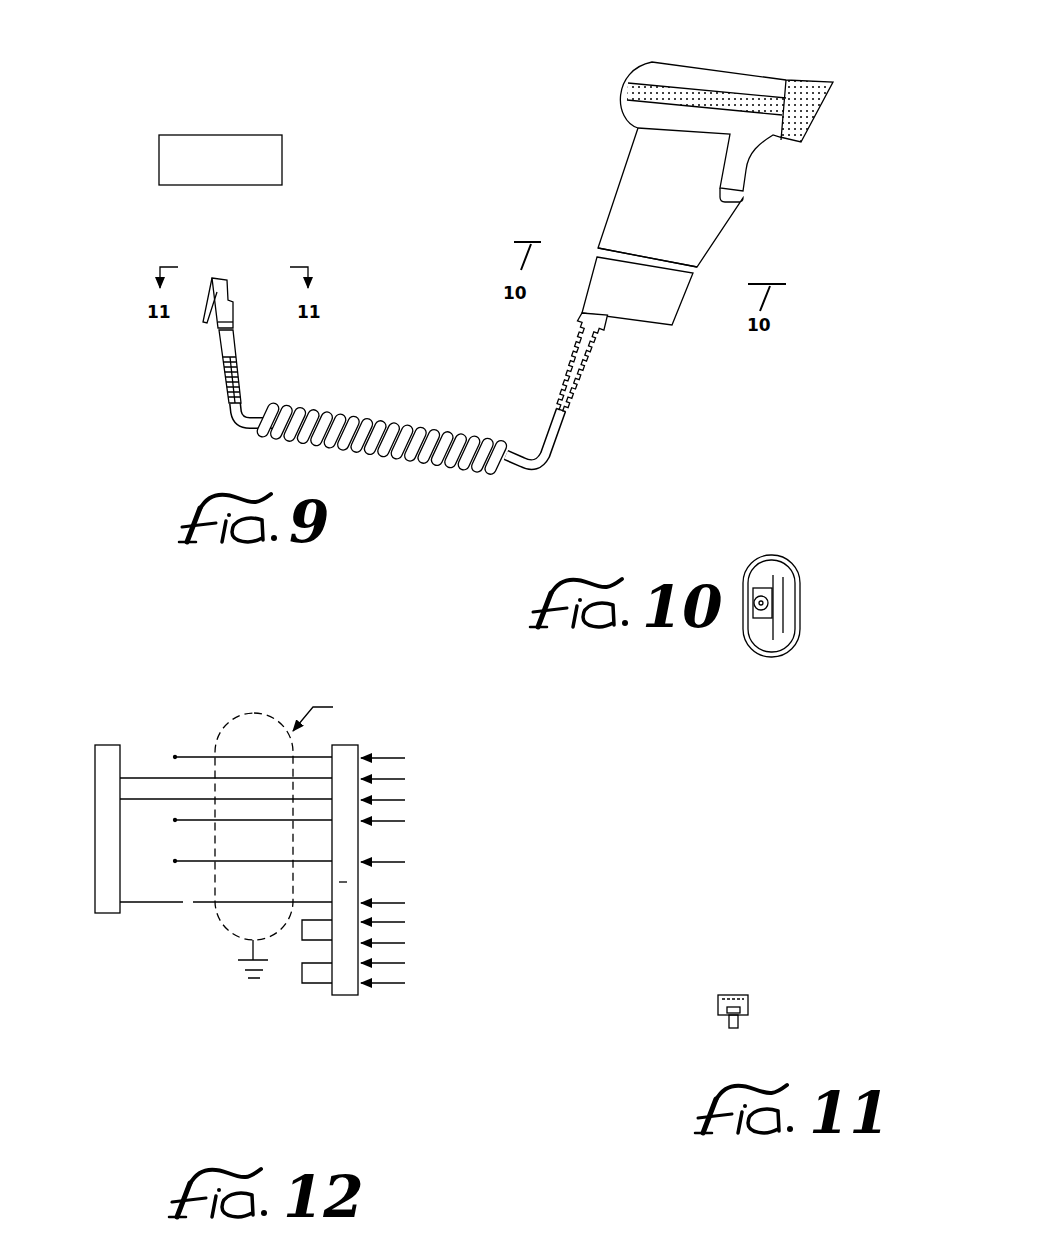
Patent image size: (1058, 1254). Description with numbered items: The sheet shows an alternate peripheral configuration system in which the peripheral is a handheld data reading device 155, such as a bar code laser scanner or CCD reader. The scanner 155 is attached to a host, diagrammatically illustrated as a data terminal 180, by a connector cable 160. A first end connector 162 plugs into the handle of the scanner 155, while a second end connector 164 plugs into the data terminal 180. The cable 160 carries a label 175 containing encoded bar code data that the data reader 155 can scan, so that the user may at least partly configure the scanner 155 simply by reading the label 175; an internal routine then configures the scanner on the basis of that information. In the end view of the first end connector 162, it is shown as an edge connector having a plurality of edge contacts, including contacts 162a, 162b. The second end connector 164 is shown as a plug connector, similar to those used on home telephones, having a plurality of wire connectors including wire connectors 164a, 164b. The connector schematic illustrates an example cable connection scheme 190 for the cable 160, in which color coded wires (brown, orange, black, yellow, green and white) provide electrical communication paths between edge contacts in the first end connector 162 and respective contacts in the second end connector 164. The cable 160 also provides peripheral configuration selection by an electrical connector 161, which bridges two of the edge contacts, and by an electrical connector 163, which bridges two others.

In FIG. 10, the handheld data reading device 155 is at (620, 157).
In FIG. 9, the connector cable 160 is at (375, 472).
In FIG. 12, the electrical connector 161 is at (300, 938).
In FIG. 10, the first end connector 162 is at (676, 323).
In FIG. 12, the first end connector 162 is at (341, 998).
In FIG. 10, the edge contact 162a is at (773, 640).
In FIG. 10, the edge contact 162b is at (784, 576).
In FIG. 12, the electrical connector 163 is at (300, 980).
In FIG. 9, the second end connector 164 is at (236, 322).
In FIG. 11, the second end connector 164 is at (708, 1024).
In FIG. 12, the second end connector 164 is at (105, 913).
In FIG. 11, the wire connector 164a is at (743, 993).
In FIG. 11, the wire connector 164b is at (720, 992).
In FIG. 9, the label 175 is at (241, 368).
In FIG. 9, the data terminal 180 is at (216, 275).
In FIG. 12, the cable connection scheme 190 is at (138, 947).